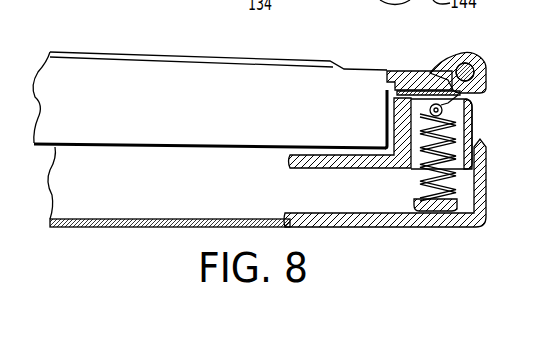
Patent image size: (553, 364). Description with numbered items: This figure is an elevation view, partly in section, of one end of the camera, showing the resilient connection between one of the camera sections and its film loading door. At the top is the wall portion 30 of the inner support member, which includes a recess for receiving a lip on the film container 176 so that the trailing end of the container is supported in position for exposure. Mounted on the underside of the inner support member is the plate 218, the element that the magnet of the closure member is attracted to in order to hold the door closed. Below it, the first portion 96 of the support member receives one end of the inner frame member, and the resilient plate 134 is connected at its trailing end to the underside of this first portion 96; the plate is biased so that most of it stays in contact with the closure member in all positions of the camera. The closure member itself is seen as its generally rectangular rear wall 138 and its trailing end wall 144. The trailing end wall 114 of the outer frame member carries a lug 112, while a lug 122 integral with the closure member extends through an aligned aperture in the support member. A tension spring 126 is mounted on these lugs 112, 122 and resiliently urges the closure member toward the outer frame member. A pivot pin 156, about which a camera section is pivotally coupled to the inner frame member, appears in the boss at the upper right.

The wall portion 30 is at (435, 72).
The first portion 96 is at (290, 158).
The lug 112 is at (455, 98).
The trailing end wall 114 is at (470, 127).
The lug 122 is at (413, 201).
The tension spring 126 is at (420, 168).
The resilient plate 134 is at (198, 219).
The rear wall 138 is at (123, 226).
The trailing end wall 144 is at (482, 207).
The pivot pin 156 is at (472, 66).
The film container 176 is at (167, 55).
The plate 218 is at (385, 99).